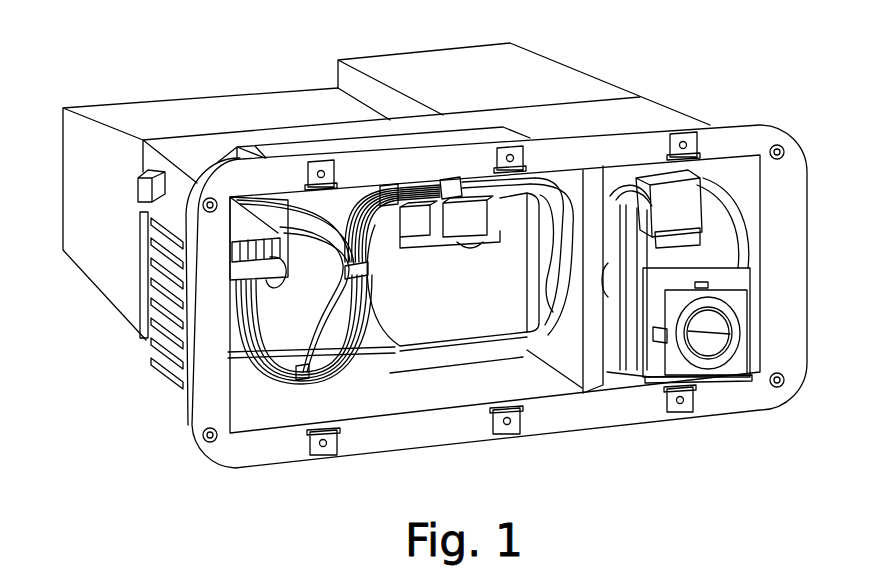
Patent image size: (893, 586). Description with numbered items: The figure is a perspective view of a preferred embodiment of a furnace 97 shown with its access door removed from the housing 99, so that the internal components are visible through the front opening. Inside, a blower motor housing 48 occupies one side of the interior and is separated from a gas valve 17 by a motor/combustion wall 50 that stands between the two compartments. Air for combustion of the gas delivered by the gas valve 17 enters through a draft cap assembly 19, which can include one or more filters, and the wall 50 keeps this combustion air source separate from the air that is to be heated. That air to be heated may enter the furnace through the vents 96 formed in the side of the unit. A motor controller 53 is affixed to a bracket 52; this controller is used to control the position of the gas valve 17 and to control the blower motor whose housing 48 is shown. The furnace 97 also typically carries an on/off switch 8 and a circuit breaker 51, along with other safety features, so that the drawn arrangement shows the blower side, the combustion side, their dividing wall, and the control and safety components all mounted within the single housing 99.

The furnace 97 is at (648, 86).
The housing 99 is at (580, 113).
The vents 96 is at (162, 367).
The motor controller 53 is at (150, 347).
The bracket 52 is at (240, 200).
The on/off switch 8 is at (423, 253).
The circuit breaker 51 is at (497, 216).
The blower motor housing 48 is at (468, 322).
The motor/combustion wall 50 is at (593, 375).
The gas valve 17 is at (714, 191).
The draft cap assembly 19 is at (733, 364).